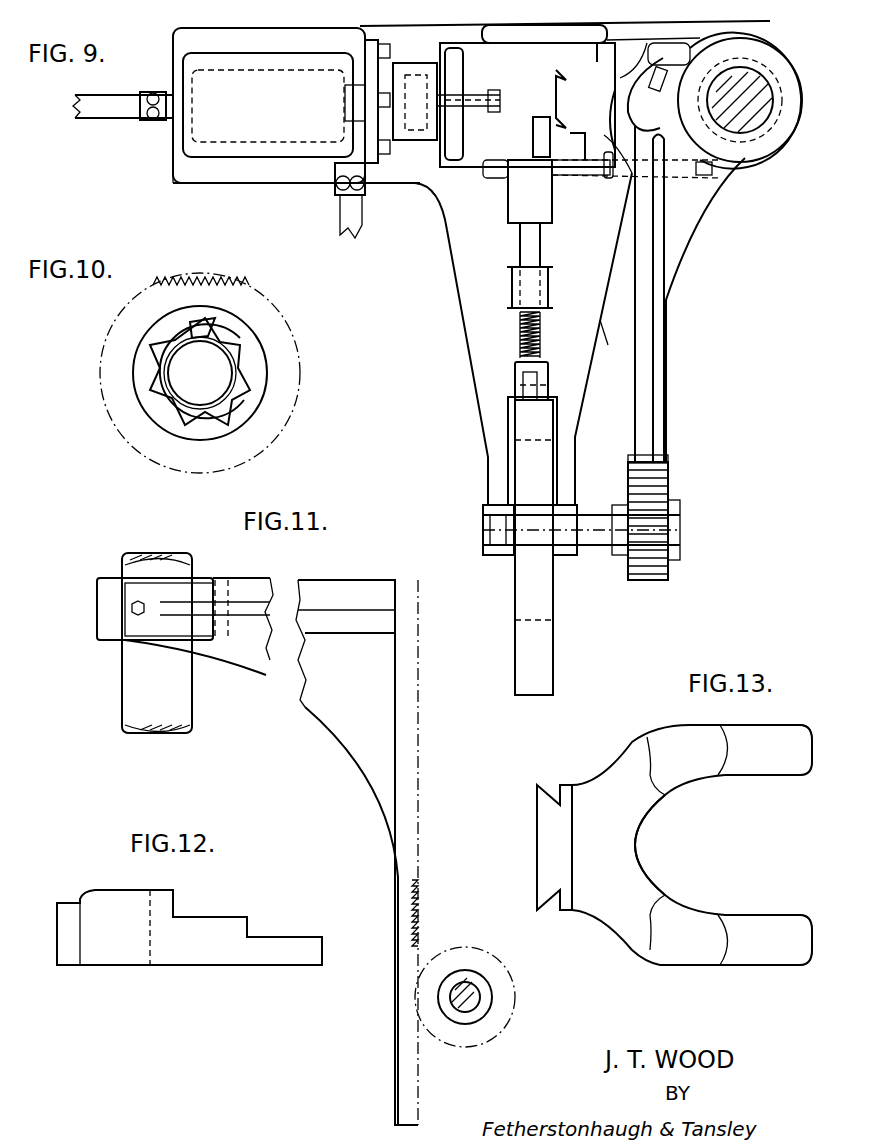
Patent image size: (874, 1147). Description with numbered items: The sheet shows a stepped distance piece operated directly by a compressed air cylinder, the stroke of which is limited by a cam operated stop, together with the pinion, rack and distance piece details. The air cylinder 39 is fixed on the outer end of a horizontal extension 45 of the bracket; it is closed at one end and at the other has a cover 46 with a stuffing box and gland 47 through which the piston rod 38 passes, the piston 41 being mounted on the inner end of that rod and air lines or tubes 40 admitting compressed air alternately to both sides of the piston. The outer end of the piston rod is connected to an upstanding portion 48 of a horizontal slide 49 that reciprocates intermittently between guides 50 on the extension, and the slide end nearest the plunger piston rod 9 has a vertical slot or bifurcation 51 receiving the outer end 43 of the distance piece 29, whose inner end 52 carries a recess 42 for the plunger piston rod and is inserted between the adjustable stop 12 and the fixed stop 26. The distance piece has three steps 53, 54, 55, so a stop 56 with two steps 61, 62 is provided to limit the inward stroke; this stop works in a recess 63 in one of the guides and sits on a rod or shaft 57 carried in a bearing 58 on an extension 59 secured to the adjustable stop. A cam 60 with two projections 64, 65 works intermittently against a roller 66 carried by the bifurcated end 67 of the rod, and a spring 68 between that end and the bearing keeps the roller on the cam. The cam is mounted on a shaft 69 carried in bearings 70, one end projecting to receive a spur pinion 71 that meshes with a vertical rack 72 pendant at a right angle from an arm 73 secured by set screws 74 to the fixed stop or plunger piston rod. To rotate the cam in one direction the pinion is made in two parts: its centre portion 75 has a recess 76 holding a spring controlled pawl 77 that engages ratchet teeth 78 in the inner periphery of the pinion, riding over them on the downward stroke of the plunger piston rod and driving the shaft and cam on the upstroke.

In FIG. 9, the plunger piston rod 9 is at (766, 80).
In FIG. 11, the plunger piston rod 9 is at (122, 715).
In FIG. 9, the adjustable stop 12 is at (757, 50).
In FIG. 9, the fixed stop 26 is at (776, 140).
In FIG. 11, the fixed stop 26 is at (210, 581).
In FIG. 9, the distance piece 29 is at (620, 235).
In FIG. 12, the distance piece 29 is at (189, 927).
In FIG. 13, the distance piece 29 is at (692, 845).
In FIG. 9, the piston rod 38 is at (442, 100).
In FIG. 9, the air cylinder 39 is at (240, 50).
In FIG. 9, the air lines or tubes 40 is at (114, 121).
In FIG. 9, the piston 41 is at (318, 112).
In FIG. 9, the recess 42 is at (606, 92).
In FIG. 12, the recess 42 is at (150, 951).
In FIG. 13, the recess 42 is at (637, 870).
In FIG. 12, the outer end of the distance piece 43 is at (57, 966).
In FIG. 13, the outer end of the distance piece 43 is at (537, 855).
In FIG. 9, the horizontal extension 45 is at (175, 183).
In FIG. 9, the cover 46 is at (358, 48).
In FIG. 9, the stuffing box and gland 47 is at (420, 141).
In FIG. 9, the upstanding portion 48 is at (444, 50).
In FIG. 9, the horizontal slide 49 is at (565, 94).
In FIG. 9, the guides 50 is at (595, 64).
In FIG. 9, the slot or bifurcation 51 is at (555, 80).
In FIG. 12, the inner end of the distance piece 52 is at (323, 966).
In FIG. 13, the inner end of the distance piece 52 is at (808, 966).
In FIG. 12, the step 53 is at (306, 937).
In FIG. 13, the step 53 is at (784, 845).
In FIG. 12, the step 54 is at (224, 917).
In FIG. 13, the step 54 is at (700, 845).
In FIG. 12, the step 55 is at (118, 889).
In FIG. 13, the step 55 is at (636, 752).
In FIG. 9, the stop 56 is at (552, 208).
In FIG. 9, the rod or shaft 57 is at (520, 245).
In FIG. 9, the bearing 58 is at (512, 293).
In FIG. 9, the extension 59 is at (596, 336).
In FIG. 9, the cam 60 is at (534, 547).
In FIG. 9, the step 61 is at (533, 137).
In FIG. 9, the step 62 is at (508, 205).
In FIG. 9, the recess 63 is at (585, 131).
In FIG. 9, the projection 64 is at (520, 428).
In FIG. 9, the projection 65 is at (514, 696).
In FIG. 9, the roller 66 is at (523, 390).
In FIG. 9, the bifurcated end 67 is at (548, 376).
In FIG. 9, the spring 68 is at (542, 337).
In FIG. 9, the shaft 69 is at (594, 548).
In FIG. 11, the shaft 69 is at (465, 985).
In FIG. 9, the bearing 70 is at (566, 506).
In FIG. 9, the spur pinion 71 is at (668, 582).
In FIG. 10, the spur pinion 71 is at (100, 400).
In FIG. 11, the spur pinion 71 is at (453, 1052).
In FIG. 9, the vertical rack 72 is at (668, 466).
In FIG. 11, the vertical rack 72 is at (421, 856).
In FIG. 9, the arm 73 is at (665, 408).
In FIG. 11, the arm 73 is at (380, 580).
In FIG. 9, the set screw 74 is at (728, 203).
In FIG. 11, the set screw 74 is at (138, 620).
In FIG. 10, the centre portion 75 is at (168, 418).
In FIG. 10, the recess 76 is at (200, 373).
In FIG. 10, the pawl 77 is at (197, 322).
In FIG. 10, the ratchet teeth 78 is at (236, 412).